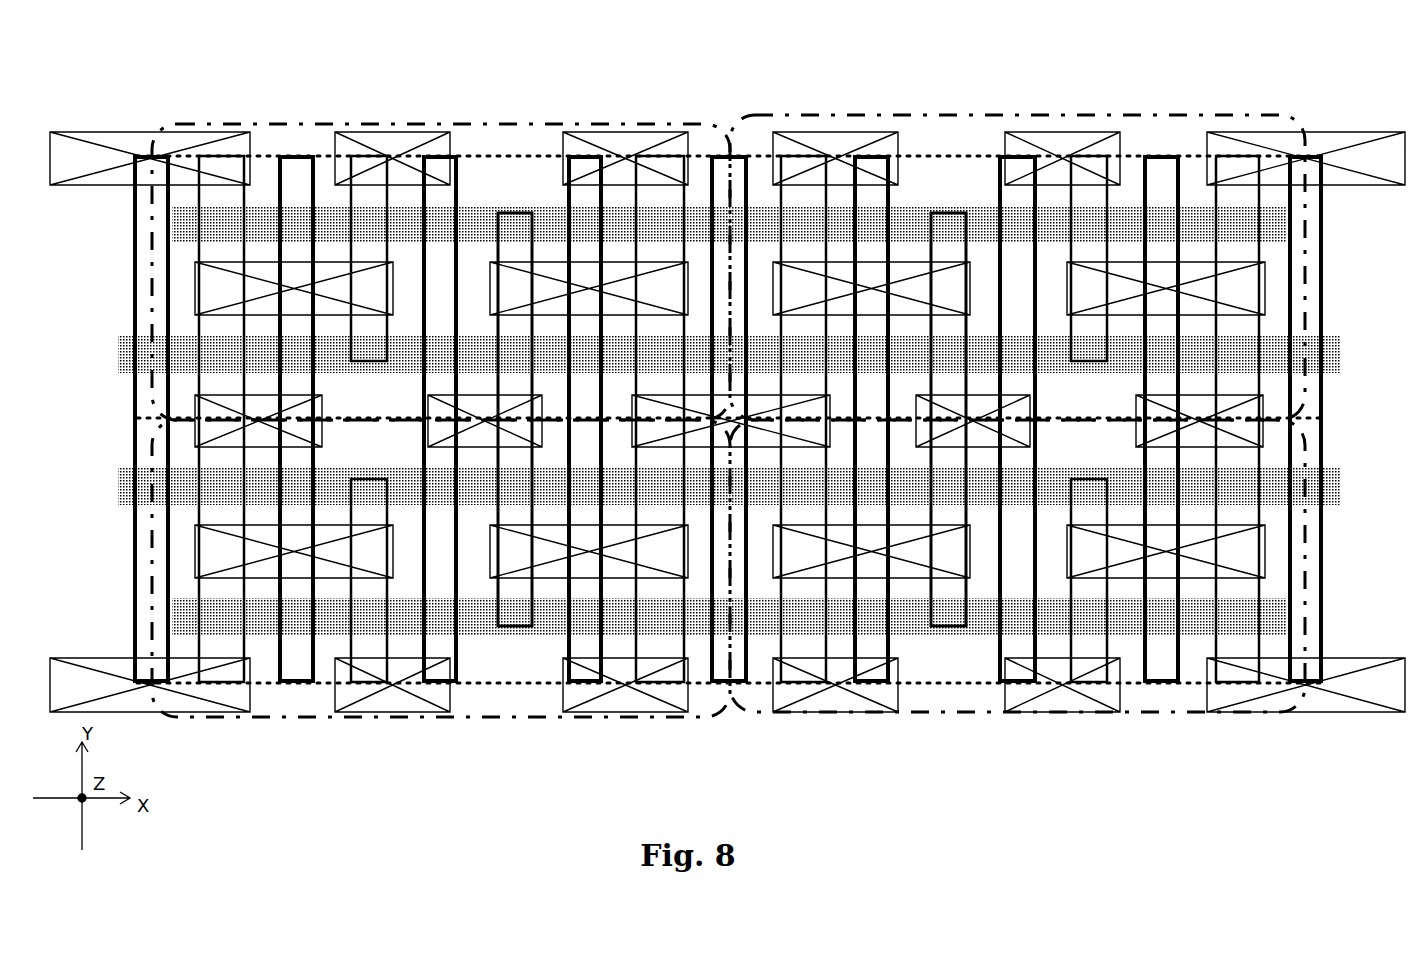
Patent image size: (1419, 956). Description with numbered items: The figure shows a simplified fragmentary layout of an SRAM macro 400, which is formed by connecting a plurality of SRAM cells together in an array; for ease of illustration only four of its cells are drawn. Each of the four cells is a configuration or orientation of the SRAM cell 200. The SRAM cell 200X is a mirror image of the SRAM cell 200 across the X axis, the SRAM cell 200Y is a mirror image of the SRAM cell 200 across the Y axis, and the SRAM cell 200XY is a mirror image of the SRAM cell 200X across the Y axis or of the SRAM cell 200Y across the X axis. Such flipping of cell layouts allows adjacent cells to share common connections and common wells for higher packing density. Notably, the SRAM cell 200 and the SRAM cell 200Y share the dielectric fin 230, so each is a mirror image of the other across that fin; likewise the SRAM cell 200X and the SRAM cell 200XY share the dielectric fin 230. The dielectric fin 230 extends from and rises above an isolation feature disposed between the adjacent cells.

The SRAM macro 400 is at (216, 66).
The SRAM cell 200 is at (1175, 109).
The SRAM cell 200Y is at (431, 119).
The SRAM cell 200X is at (1125, 723).
The SRAM cell 200XY is at (503, 726).
The dielectric fin 230 is at (724, 146).